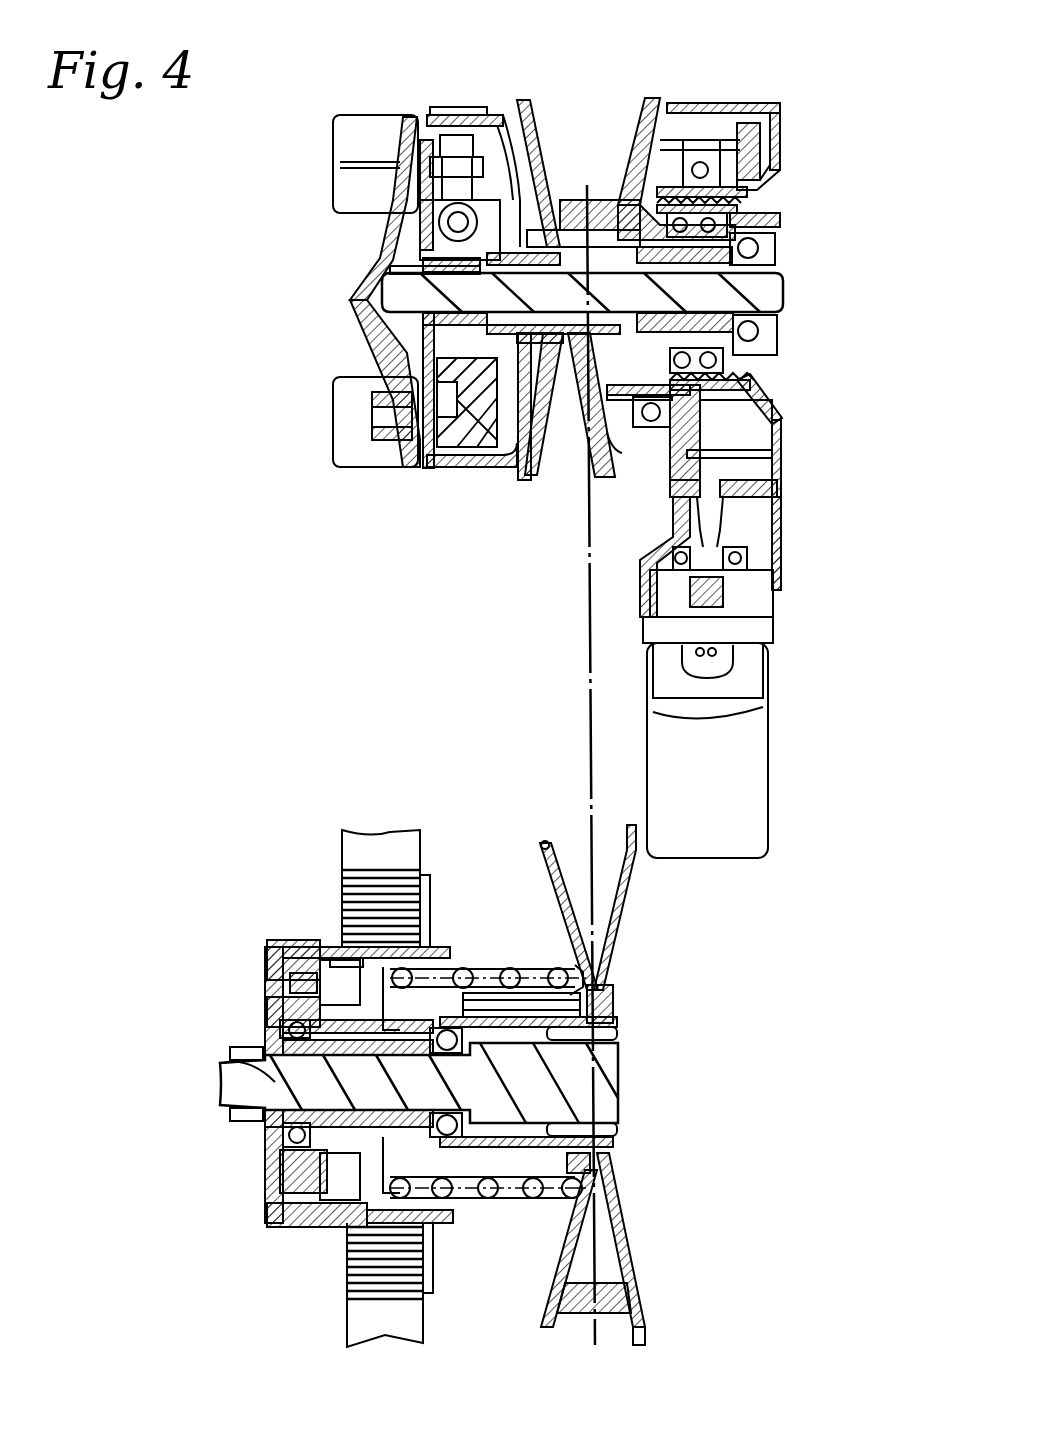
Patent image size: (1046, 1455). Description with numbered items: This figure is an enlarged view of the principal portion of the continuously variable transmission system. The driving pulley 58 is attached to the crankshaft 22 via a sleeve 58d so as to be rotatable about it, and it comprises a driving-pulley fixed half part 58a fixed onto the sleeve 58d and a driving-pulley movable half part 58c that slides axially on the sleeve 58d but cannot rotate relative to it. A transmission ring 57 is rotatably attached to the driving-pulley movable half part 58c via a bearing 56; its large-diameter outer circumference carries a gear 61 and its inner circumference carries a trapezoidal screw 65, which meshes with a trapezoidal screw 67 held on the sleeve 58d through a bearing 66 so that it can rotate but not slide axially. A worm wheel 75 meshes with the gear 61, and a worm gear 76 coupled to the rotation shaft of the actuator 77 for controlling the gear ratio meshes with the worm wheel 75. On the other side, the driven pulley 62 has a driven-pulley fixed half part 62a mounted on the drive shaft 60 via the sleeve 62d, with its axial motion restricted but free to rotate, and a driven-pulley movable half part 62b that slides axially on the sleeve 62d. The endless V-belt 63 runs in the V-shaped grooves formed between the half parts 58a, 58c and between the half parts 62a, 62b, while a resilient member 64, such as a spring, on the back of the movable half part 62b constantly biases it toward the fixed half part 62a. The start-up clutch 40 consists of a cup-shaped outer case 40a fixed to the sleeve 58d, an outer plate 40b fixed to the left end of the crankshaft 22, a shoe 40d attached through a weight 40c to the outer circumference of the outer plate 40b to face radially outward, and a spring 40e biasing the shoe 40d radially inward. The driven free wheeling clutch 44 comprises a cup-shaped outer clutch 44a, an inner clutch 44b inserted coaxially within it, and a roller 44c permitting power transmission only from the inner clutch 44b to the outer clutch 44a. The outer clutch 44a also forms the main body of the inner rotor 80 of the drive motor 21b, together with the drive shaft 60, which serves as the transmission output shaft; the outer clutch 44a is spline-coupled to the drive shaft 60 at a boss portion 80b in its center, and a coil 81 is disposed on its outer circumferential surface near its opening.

The crankshaft 22 is at (770, 300).
The start-up clutch 40 is at (437, 103).
The cup-shaped outer case 40a is at (490, 108).
The outer plate 40b is at (440, 352).
The weight 40c is at (458, 440).
The shoe 40d is at (480, 450).
The spring 40e is at (440, 222).
The bearing 56 is at (700, 140).
The transmission ring 57 is at (760, 135).
The driving pulley 58 is at (638, 98).
The driving-pulley fixed half part 58a is at (524, 98).
The driving-pulley movable half part 58c is at (648, 103).
The sleeve 58d is at (770, 225).
The gear 61 is at (745, 103).
The trapezoidal screw 65 is at (750, 190).
The bearing 66 is at (760, 360).
The trapezoidal screw 67 is at (785, 385).
The worm wheel 75 is at (745, 450).
The worm gear 76 is at (750, 515).
The actuator 77 is at (768, 748).
The drive shaft 60 is at (618, 1085).
The driven pulley 62 is at (560, 820).
The driven-pulley fixed half part 62a is at (620, 900).
The driven-pulley movable half part 62b is at (541, 845).
The sleeve 62d is at (615, 1022).
The endless V-belt 63 is at (625, 1300).
The resilient member 64 is at (488, 1195).
The drive motor 21b is at (278, 910).
The driven free wheeling clutch 44 is at (180, 1005).
The outer clutch 44a is at (275, 955).
The inner clutch 44b is at (275, 1010).
The roller 44c is at (285, 980).
The inner rotor 80 is at (255, 1137).
The boss portion 80b is at (268, 1078).
The coil 81 is at (347, 1277).